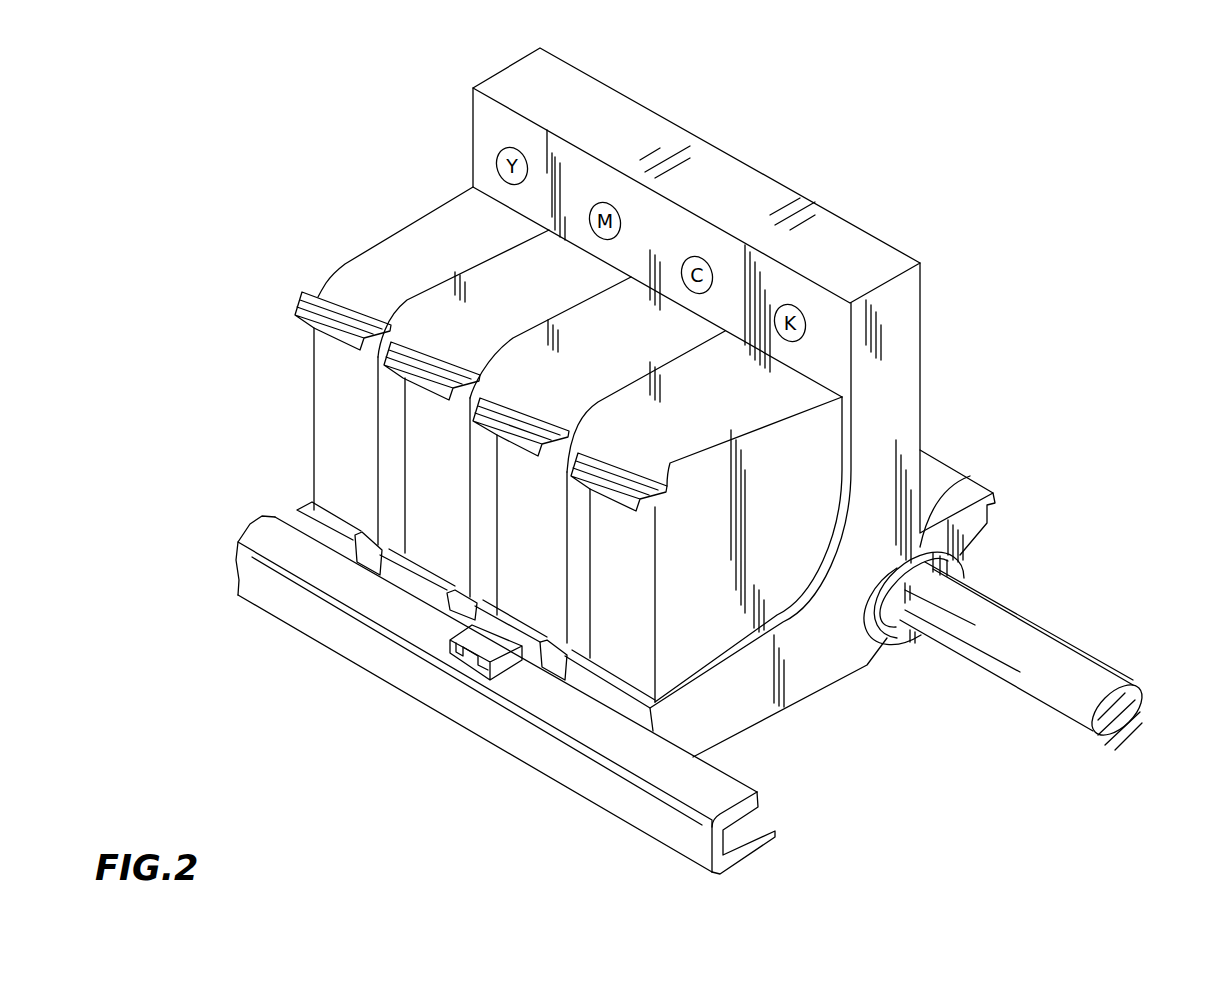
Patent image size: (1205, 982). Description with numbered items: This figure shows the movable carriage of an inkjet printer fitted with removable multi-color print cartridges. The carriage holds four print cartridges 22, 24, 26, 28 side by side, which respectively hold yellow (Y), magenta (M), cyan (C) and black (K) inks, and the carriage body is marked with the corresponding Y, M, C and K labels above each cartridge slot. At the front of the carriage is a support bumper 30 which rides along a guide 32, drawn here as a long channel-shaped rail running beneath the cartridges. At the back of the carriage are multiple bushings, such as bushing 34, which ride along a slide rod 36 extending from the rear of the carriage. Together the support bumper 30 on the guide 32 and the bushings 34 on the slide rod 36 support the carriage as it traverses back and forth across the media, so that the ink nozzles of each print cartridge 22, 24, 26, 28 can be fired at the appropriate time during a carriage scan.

The print cartridge 22 is at (387, 260).
The print cartridge 24 is at (513, 295).
The print cartridge 26 is at (643, 320).
The print cartridge 28 is at (785, 395).
The support bumper 30 is at (458, 670).
The guide 32 is at (567, 770).
The bushing 34 is at (968, 478).
The slide rod 36 is at (1035, 640).